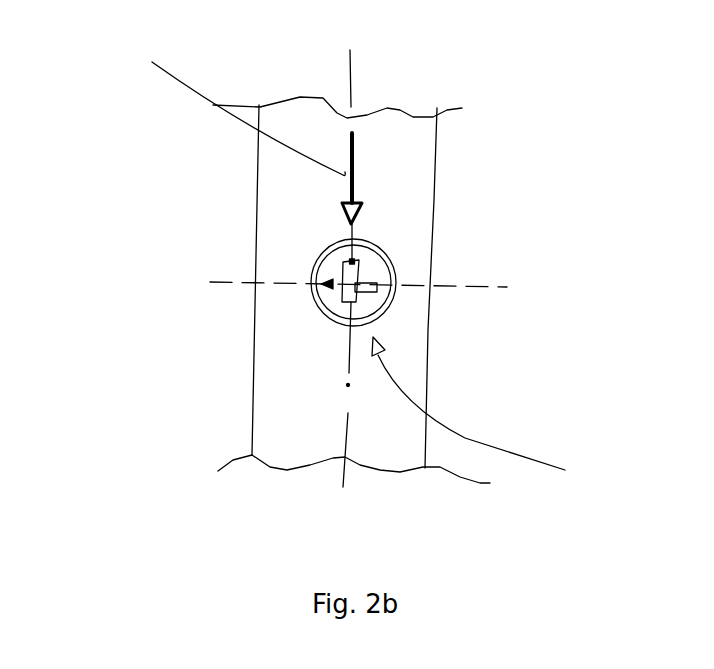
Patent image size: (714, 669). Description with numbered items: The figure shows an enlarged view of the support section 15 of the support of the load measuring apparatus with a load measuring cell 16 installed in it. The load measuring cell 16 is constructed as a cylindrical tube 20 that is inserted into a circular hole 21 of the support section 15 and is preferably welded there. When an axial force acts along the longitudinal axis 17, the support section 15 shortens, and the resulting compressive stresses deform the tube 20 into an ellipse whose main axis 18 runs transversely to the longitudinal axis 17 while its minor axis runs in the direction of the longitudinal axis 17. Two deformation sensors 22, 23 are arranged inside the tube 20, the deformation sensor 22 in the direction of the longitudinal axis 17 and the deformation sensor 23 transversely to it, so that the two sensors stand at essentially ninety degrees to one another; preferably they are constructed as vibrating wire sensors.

The support section 15 is at (402, 178).
The load measuring cell 16 is at (491, 414).
The longitudinal axis 17 is at (352, 83).
The main axis 18 is at (497, 280).
The cylindrical tube 20 is at (392, 258).
The circular hole 21 is at (383, 314).
The deformation sensor 22 is at (333, 270).
The deformation sensor 23 is at (333, 281).